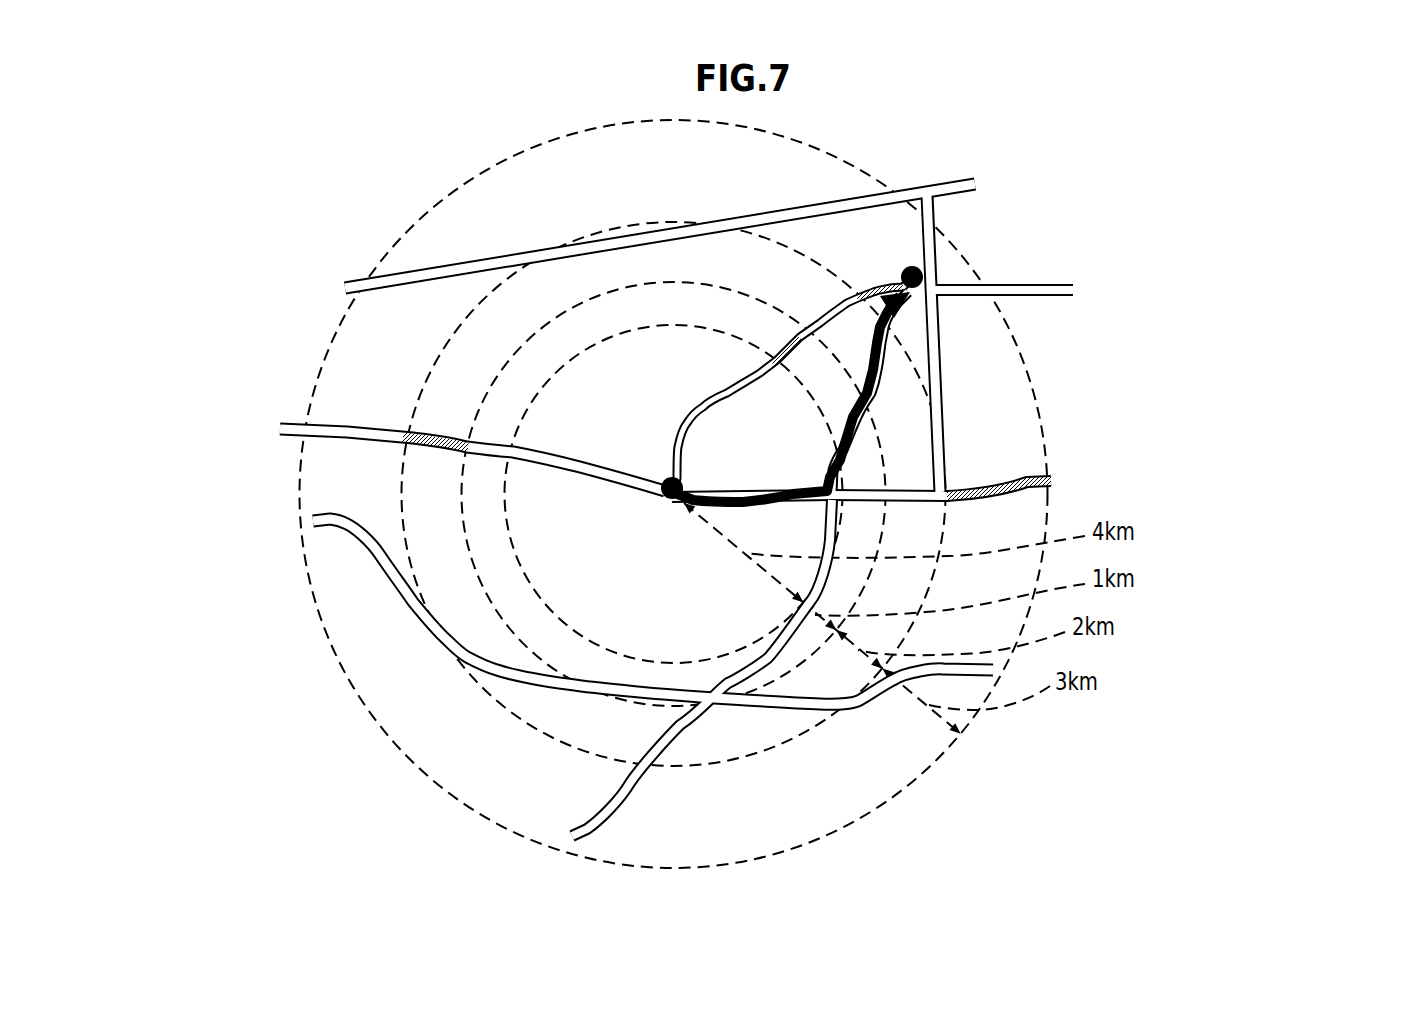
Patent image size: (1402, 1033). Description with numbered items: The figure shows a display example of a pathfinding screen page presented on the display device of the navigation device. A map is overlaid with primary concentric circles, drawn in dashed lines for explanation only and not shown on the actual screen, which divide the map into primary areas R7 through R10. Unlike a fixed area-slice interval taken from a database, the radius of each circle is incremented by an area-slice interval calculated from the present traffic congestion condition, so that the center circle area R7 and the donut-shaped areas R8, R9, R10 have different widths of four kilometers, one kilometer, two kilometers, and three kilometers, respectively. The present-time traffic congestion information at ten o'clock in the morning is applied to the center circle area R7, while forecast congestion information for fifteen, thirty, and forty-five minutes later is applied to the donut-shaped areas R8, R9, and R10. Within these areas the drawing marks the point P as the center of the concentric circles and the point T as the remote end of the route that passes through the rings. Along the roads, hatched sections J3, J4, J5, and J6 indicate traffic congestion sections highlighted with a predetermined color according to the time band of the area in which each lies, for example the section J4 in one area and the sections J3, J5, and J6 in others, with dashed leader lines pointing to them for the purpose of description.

The center circle area R7 is at (587, 605).
The donut-shaped area R8 is at (488, 568).
The donut-shaped area R9 is at (422, 528).
The donut-shaped area R10 is at (320, 492).
The current position / departure point P is at (670, 505).
The destination point T is at (933, 264).
The section J3 where congestion is forecast to occur at 10:15 J3 is at (793, 335).
The section J4 where congestion is forecast to occur at 10:30 J4 is at (428, 430).
The section J5 where congestion is forecast to occur at 10:45 J5 is at (916, 296).
The section J6 where congestion is forecast to occur at 10:45 J6 is at (1014, 470).